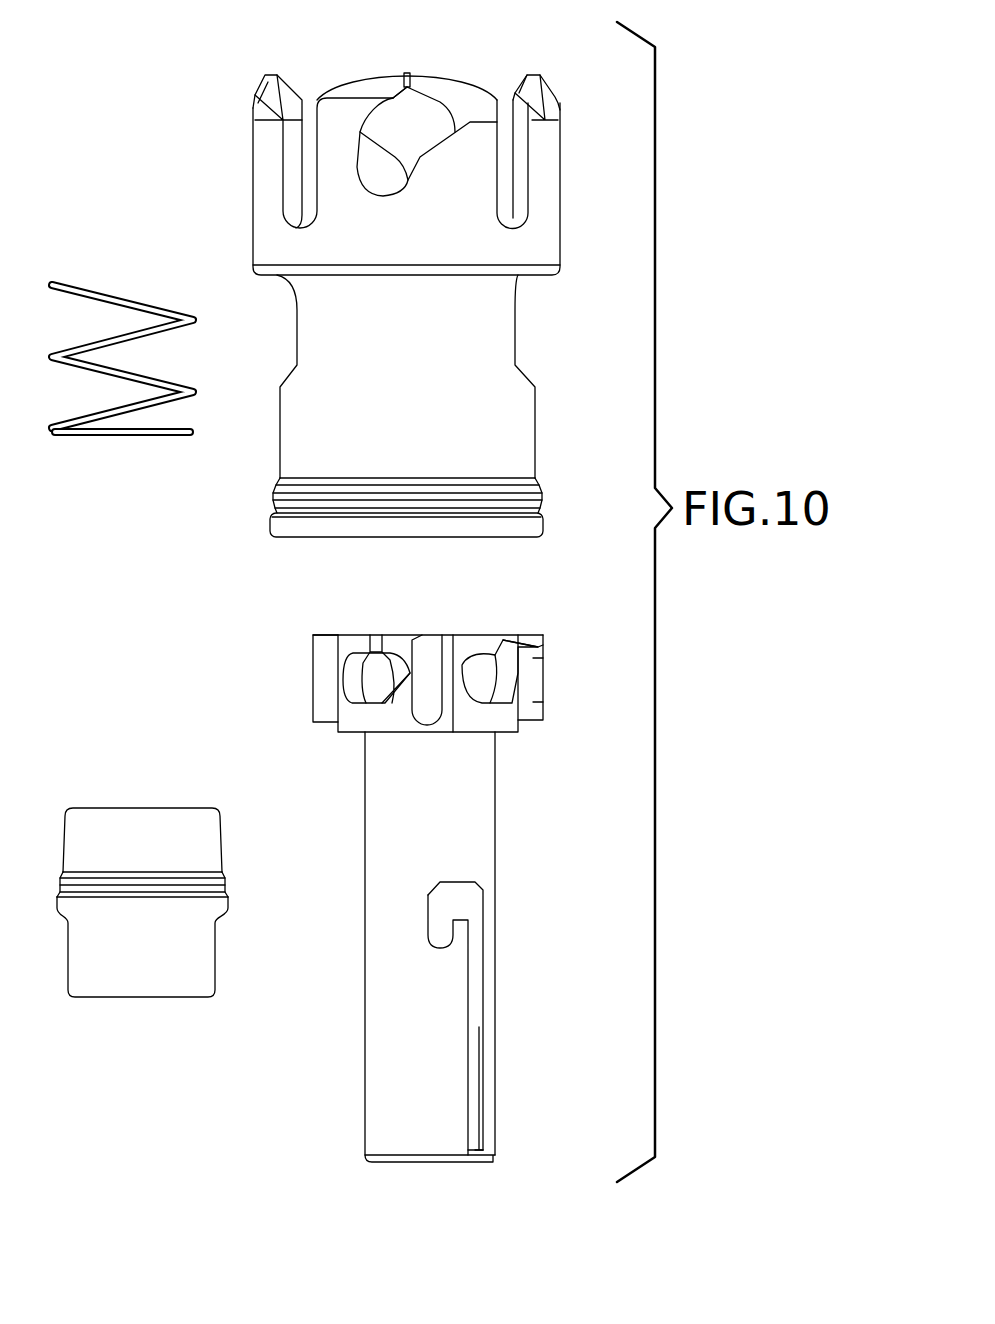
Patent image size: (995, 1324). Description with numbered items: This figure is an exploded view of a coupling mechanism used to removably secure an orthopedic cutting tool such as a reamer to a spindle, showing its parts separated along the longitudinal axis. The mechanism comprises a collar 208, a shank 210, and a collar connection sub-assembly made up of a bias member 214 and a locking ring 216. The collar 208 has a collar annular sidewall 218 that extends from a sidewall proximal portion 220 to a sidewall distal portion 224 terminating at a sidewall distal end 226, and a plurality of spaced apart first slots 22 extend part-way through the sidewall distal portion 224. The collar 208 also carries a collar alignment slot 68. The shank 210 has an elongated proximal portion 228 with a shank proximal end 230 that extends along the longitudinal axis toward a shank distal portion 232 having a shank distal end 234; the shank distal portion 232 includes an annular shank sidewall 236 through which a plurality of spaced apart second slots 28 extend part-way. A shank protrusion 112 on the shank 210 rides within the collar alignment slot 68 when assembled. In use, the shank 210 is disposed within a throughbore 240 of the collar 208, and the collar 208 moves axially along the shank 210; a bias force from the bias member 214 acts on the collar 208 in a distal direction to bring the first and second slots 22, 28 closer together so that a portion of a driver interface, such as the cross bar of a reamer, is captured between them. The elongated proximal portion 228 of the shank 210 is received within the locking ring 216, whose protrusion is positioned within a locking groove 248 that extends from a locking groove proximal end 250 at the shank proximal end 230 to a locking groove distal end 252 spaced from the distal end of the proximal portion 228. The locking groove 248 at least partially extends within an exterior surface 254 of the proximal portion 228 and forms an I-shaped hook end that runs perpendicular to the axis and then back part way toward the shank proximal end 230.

The first slots 22 is at (410, 120).
The second slots 28 is at (493, 670).
The collar alignment slot 68 is at (307, 164).
The shank protrusion 112 is at (437, 687).
The collar 208 is at (401, 299).
The shank 210 is at (442, 887).
The bias member 214 is at (175, 352).
The locking ring 216 is at (235, 903).
The collar annular sidewall 218 is at (478, 427).
The sidewall proximal portion 220 is at (312, 410).
The sidewall distal portion 224 is at (543, 237).
The sidewall distal end 226 is at (405, 72).
The elongated proximal portion 228 is at (383, 1045).
The shank proximal end 230 is at (395, 1165).
The shank distal portion 232 is at (535, 703).
The shank distal end 234 is at (403, 636).
The annular shank sidewall 236 is at (530, 658).
The throughbore 240 is at (360, 545).
The locking groove 248 is at (473, 1037).
The locking groove proximal end 250 is at (498, 1153).
The locking groove distal end 252 is at (452, 905).
The exterior surface 254 is at (398, 1082).